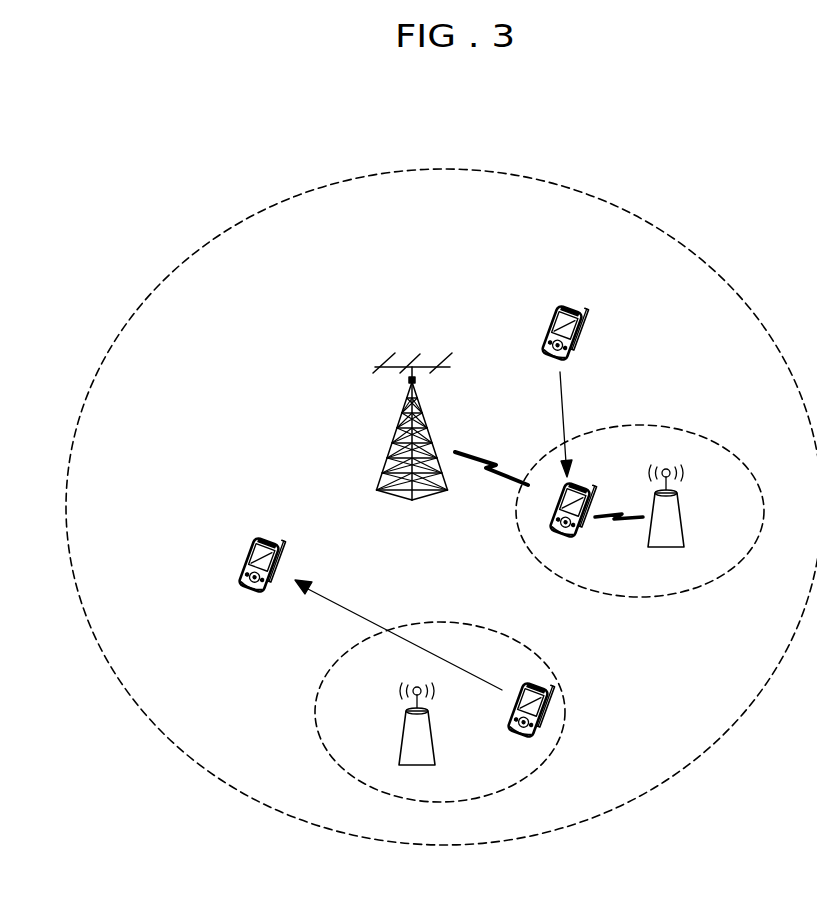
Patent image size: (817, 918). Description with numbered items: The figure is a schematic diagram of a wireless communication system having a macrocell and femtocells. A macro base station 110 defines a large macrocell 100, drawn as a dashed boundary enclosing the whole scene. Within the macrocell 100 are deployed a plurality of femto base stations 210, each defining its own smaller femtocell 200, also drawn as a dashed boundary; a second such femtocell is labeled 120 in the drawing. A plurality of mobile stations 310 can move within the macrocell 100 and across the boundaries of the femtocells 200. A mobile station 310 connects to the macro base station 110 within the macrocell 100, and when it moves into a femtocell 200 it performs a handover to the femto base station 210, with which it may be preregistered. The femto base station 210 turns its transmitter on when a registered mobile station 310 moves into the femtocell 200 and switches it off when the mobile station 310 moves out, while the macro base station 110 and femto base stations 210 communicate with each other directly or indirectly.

The macrocell 100 is at (300, 197).
The macro base station 110 is at (412, 367).
The second small cell coverage area 120 is at (318, 733).
The femtocell 200 is at (728, 440).
The femto base station 210 is at (684, 517).
The mobile station 310 is at (560, 307).